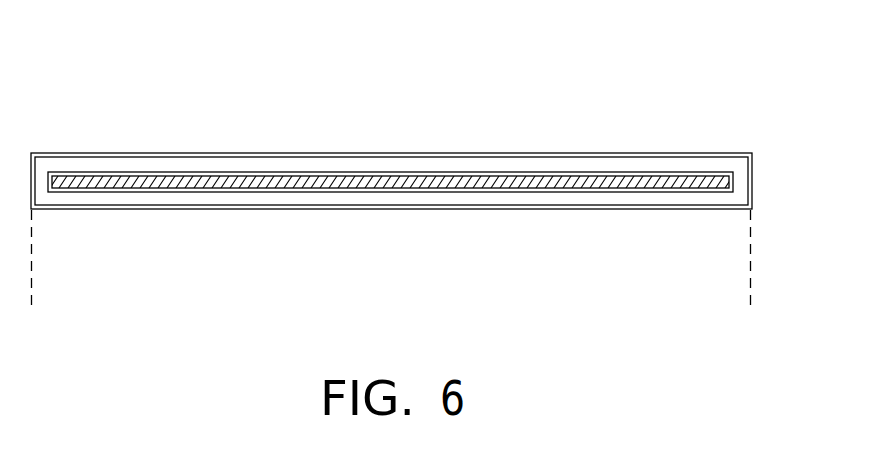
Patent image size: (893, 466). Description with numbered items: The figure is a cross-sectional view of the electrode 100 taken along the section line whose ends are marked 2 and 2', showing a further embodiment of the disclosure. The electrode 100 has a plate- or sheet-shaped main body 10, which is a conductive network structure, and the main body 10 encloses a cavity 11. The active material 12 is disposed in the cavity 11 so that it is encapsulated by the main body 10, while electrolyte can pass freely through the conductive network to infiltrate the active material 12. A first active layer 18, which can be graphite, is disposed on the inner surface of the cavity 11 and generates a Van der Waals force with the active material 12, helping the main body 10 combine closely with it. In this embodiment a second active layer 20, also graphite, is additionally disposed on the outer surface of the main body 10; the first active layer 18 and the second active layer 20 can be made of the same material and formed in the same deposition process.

The electrode 100 is at (414, 138).
The second active layer 20 is at (148, 153).
The main body 10 is at (249, 153).
The cavity 11 is at (433, 173).
The first active layer 18 is at (151, 193).
The active material 12 is at (255, 189).
The section line 2-2' 2 is at (31, 283).
The section line 2- 2' is at (754, 283).